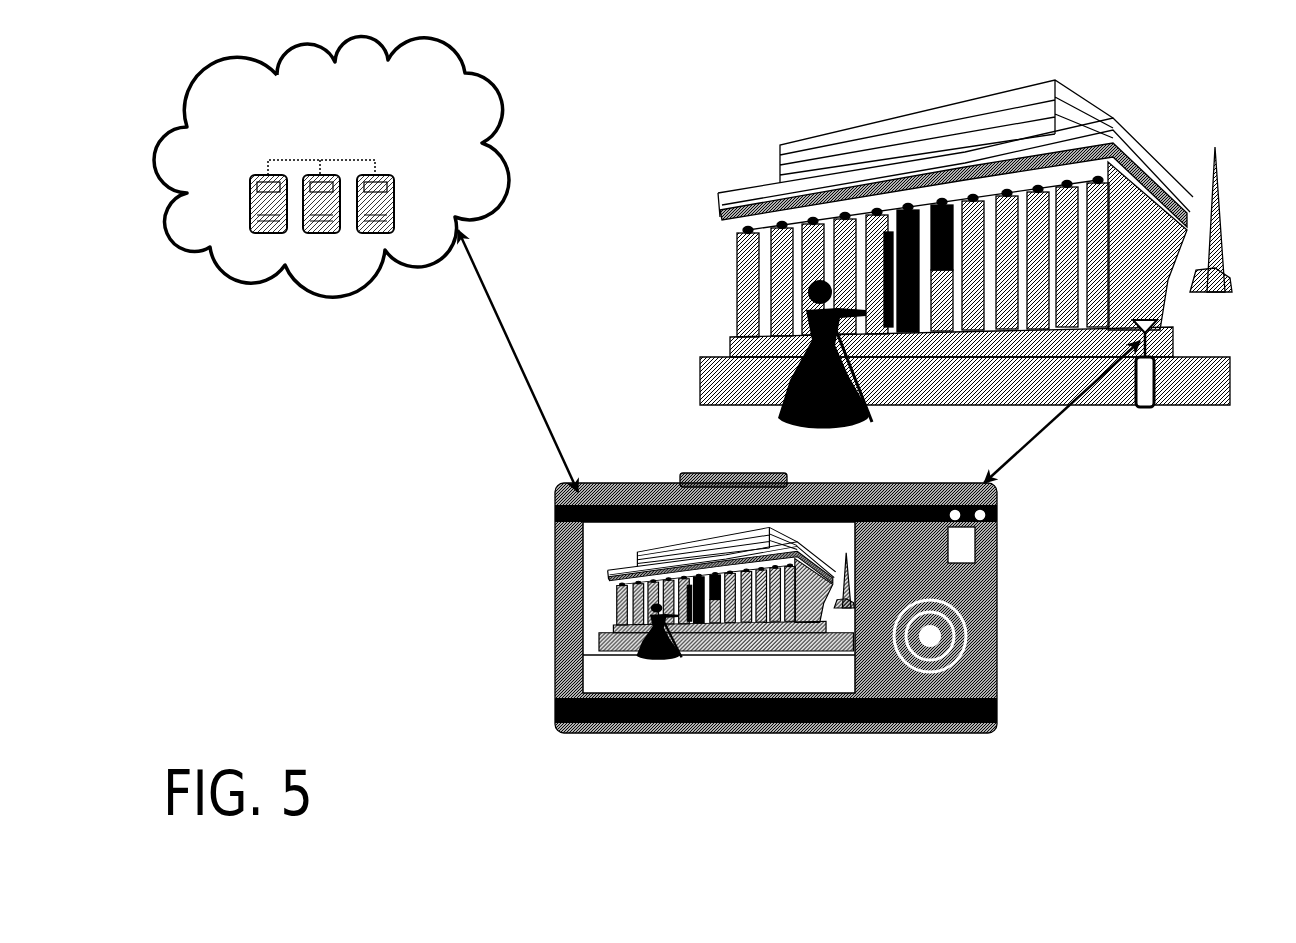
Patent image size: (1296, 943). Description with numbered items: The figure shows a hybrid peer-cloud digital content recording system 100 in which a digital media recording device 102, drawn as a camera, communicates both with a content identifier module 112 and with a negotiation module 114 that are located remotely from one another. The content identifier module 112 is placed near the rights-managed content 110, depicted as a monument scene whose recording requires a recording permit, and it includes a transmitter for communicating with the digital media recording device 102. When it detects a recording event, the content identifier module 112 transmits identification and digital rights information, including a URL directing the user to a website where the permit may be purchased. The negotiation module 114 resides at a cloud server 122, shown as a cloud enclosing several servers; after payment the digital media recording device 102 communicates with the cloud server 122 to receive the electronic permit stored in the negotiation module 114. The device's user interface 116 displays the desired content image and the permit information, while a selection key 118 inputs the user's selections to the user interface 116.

The hybrid peer-cloud digital content recording system 100 is at (238, 528).
The digital media recording device 102 is at (728, 603).
The rights-managed content 110 is at (728, 153).
The content identifier module 112 is at (1158, 392).
The negotiation module 114 is at (388, 173).
The user interface 116 is at (590, 600).
The selection key 118 is at (932, 636).
The cloud server 122 is at (224, 282).